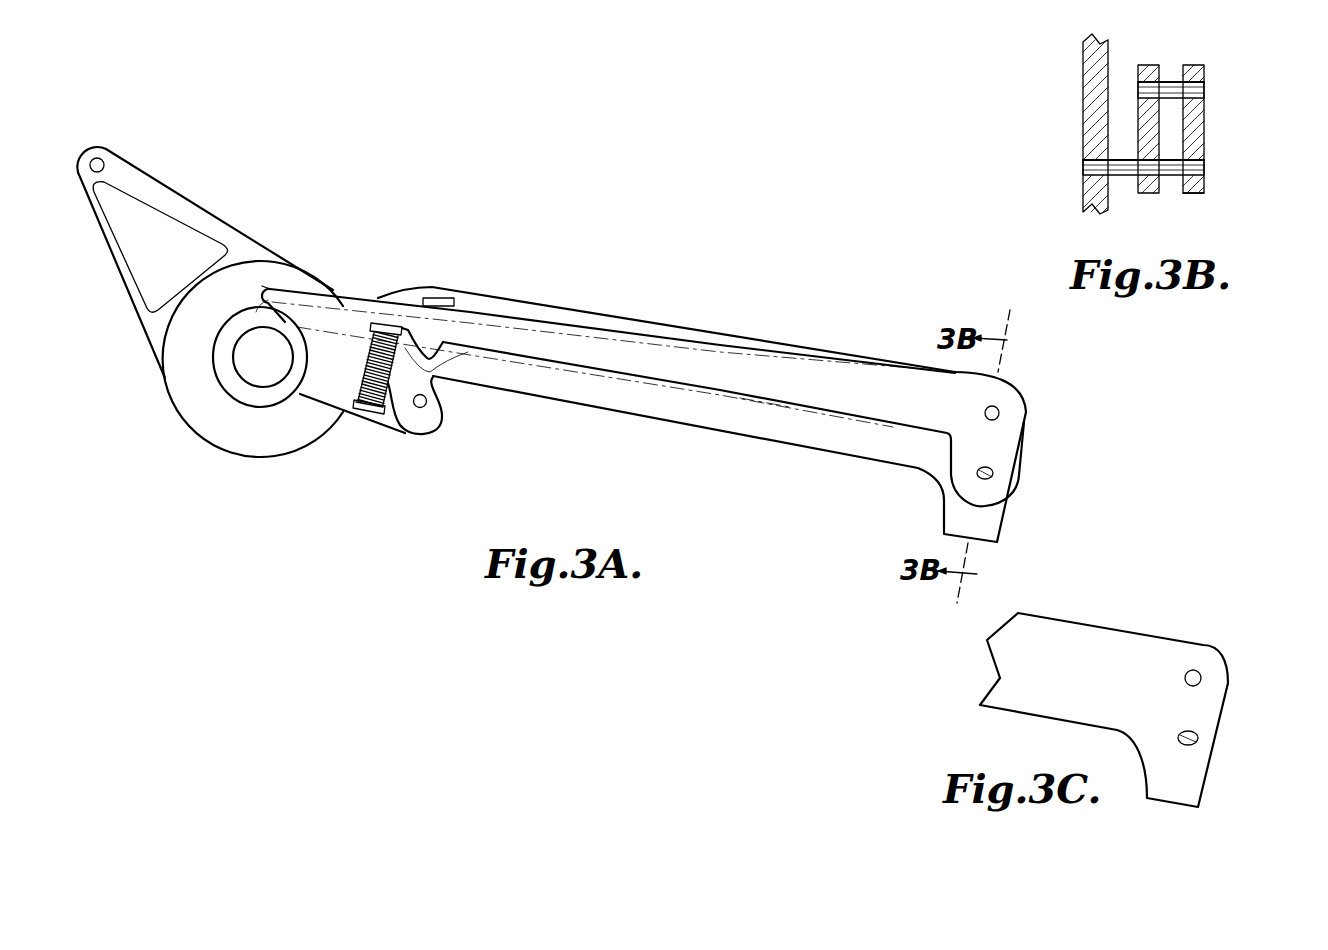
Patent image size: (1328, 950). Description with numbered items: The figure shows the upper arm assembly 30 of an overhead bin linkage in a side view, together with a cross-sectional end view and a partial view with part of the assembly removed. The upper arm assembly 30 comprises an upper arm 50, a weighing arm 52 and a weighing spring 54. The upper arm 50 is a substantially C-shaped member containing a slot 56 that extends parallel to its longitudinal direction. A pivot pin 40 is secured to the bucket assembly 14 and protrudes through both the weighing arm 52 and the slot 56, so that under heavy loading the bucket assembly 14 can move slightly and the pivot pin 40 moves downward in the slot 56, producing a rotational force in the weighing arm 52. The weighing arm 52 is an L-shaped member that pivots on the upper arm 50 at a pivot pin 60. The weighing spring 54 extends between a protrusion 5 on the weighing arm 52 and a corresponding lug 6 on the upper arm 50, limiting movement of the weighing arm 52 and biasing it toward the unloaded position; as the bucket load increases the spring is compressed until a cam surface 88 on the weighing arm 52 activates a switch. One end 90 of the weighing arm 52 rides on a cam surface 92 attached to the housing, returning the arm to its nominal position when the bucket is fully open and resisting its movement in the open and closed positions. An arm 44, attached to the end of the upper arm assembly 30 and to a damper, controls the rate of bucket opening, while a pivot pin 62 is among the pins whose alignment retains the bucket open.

In FIG. 3A, the protrusion 5 is at (383, 326).
In FIG. 3A, the lug 6 is at (370, 408).
In FIG. 3B, the bucket assembly 14 is at (1082, 123).
In FIG. 3A, the upper arm assembly 30 is at (769, 338).
In FIG. 3A, the pivot pin 40 is at (998, 473).
In FIG. 3B, the pivot pin 40 is at (1200, 167).
In FIG. 3A, the arm 44 is at (233, 222).
In FIG. 3A, the upper arm 50 is at (537, 305).
In FIG. 3B, the upper arm 50 is at (1205, 73).
In FIG. 3C, the upper arm 50 is at (1210, 655).
In FIG. 3A, the weighing arm 52 is at (762, 400).
In FIG. 3B, the weighing arm 52 is at (1147, 65).
In FIG. 3A, the weighing spring 54 is at (389, 388).
In FIG. 3B, the slot 56 is at (1192, 183).
In FIG. 3C, the slot 56 is at (1196, 734).
In FIG. 3A, the pivot pin 60 is at (1000, 415).
In FIG. 3B, the pivot pin 60 is at (1200, 88).
In FIG. 3A, the pivot pin 62 is at (426, 405).
In FIG. 3A, the cam surface 88 is at (441, 373).
In FIG. 3A, the end of the weighing arm 90 is at (262, 286).
In FIG. 3A, the cam surface 92 is at (220, 373).